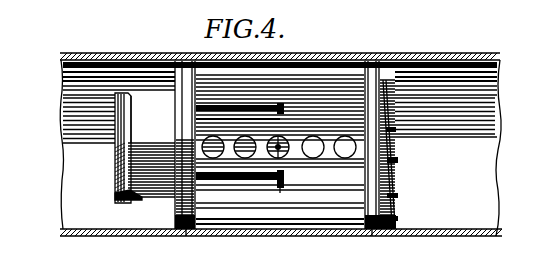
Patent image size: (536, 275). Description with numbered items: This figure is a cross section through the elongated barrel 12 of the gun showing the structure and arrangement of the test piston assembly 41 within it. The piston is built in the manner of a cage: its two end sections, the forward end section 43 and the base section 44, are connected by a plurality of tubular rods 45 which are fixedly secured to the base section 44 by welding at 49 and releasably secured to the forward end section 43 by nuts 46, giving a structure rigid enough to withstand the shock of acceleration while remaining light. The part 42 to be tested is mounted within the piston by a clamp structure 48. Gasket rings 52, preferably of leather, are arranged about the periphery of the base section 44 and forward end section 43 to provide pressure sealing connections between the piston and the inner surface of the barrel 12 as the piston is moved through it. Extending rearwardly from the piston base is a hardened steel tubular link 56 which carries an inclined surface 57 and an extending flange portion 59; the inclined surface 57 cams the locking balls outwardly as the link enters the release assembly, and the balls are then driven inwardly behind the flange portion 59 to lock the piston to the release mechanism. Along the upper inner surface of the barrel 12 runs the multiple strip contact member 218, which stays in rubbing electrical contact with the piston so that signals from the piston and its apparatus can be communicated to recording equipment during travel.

The multiple strip contact member 218 is at (62, 62).
The elongated barrel 12 is at (433, 237).
The inclined surface 57 is at (120, 141).
The hardened steel tubular link 56 is at (146, 200).
The extending flange portion 59 is at (131, 96).
The weld 49 is at (197, 202).
The base section 44 is at (198, 141).
The part to be tested 42 is at (253, 181).
The clamp structure 48 is at (284, 177).
The tubular rods 45 is at (304, 222).
The gasket rings 52 is at (186, 236).
The forward end section 43 is at (397, 154).
The nuts 46 is at (404, 208).
The test piston assembly 41 is at (407, 189).